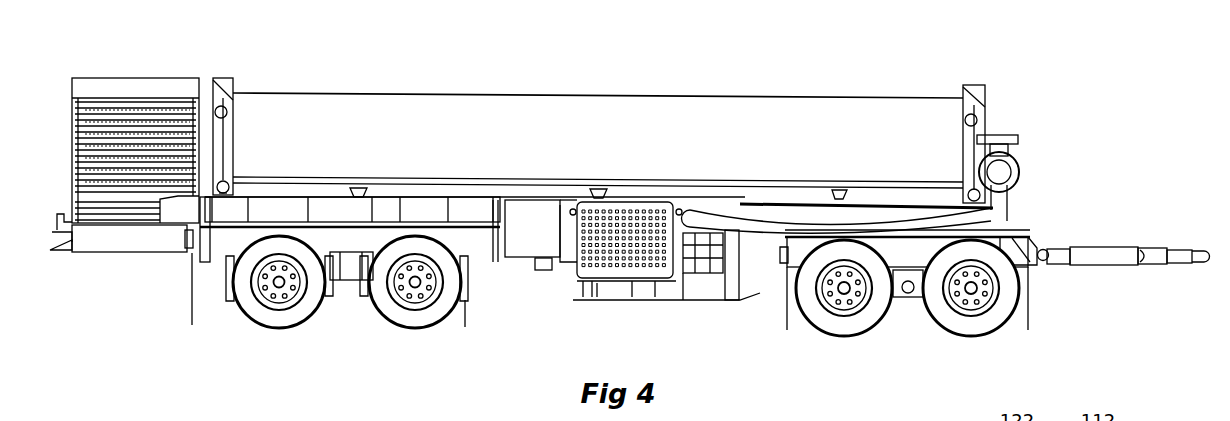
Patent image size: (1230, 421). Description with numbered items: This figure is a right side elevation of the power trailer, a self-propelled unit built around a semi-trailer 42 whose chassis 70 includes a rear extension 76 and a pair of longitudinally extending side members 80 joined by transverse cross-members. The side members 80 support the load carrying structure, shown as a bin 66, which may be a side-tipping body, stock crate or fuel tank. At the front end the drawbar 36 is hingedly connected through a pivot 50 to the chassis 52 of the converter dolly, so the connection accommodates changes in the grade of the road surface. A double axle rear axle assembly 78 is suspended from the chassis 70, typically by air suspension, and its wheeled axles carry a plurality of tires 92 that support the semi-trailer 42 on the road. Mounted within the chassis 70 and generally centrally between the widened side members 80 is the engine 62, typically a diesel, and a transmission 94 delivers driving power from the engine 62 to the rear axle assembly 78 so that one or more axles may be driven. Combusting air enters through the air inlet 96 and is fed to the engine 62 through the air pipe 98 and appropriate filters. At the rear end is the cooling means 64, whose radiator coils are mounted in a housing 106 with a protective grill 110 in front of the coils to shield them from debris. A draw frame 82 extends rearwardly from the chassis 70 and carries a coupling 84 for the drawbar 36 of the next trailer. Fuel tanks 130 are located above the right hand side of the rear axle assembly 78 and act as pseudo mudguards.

The drawbar 36 is at (1110, 253).
The semi-trailer 42 is at (878, 85).
The pivot 50 is at (1042, 248).
The chassis of the converter dolly 52 is at (1012, 247).
The engine 62 is at (660, 293).
The cooling means 64 is at (206, 78).
The bin 66 is at (723, 120).
The chassis 70 is at (567, 213).
The rear extension 76 is at (126, 243).
The rear axle assembly 78 is at (355, 322).
The side members 80 is at (567, 242).
The draw frame 82 is at (63, 242).
The coupling 84 is at (65, 253).
The tires 92 is at (260, 312).
The transmission 94 is at (541, 267).
The air inlet 96 is at (1000, 135).
The air pipe 98 is at (805, 210).
The housing 106 is at (115, 78).
The grill 110 is at (148, 125).
The fuel tanks 130 is at (338, 210).